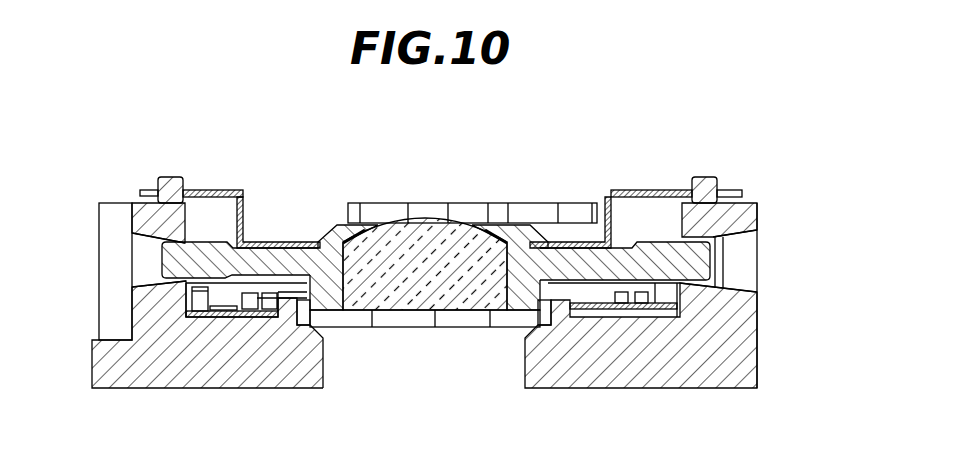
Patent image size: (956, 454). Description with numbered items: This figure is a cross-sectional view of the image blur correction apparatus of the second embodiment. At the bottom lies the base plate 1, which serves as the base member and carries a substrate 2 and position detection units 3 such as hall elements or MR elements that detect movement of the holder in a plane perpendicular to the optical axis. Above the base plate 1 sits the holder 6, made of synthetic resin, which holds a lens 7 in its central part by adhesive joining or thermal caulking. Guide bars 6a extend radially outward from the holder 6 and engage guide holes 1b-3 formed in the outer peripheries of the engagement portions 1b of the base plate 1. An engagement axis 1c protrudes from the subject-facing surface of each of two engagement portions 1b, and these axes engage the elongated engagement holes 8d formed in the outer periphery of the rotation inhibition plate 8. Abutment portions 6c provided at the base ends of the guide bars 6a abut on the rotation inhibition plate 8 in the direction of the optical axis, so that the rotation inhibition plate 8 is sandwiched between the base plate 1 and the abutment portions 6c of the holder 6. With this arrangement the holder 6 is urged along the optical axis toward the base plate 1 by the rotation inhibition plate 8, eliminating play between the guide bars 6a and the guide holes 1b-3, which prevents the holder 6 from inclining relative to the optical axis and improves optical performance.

The base plate 1 is at (568, 383).
The engagement portions 1b is at (133, 235).
The guide holes 1b-3 is at (137, 238).
The engagement axis 1c is at (173, 178).
The substrate 2 is at (232, 297).
The position detection units 3 is at (235, 295).
The holder 6 is at (333, 237).
The guide bars 6a is at (202, 253).
The abutment portions 6c is at (290, 246).
The lens 7 is at (400, 222).
The rotation inhibition plate 8 is at (608, 192).
The engagement holes 8d is at (189, 197).